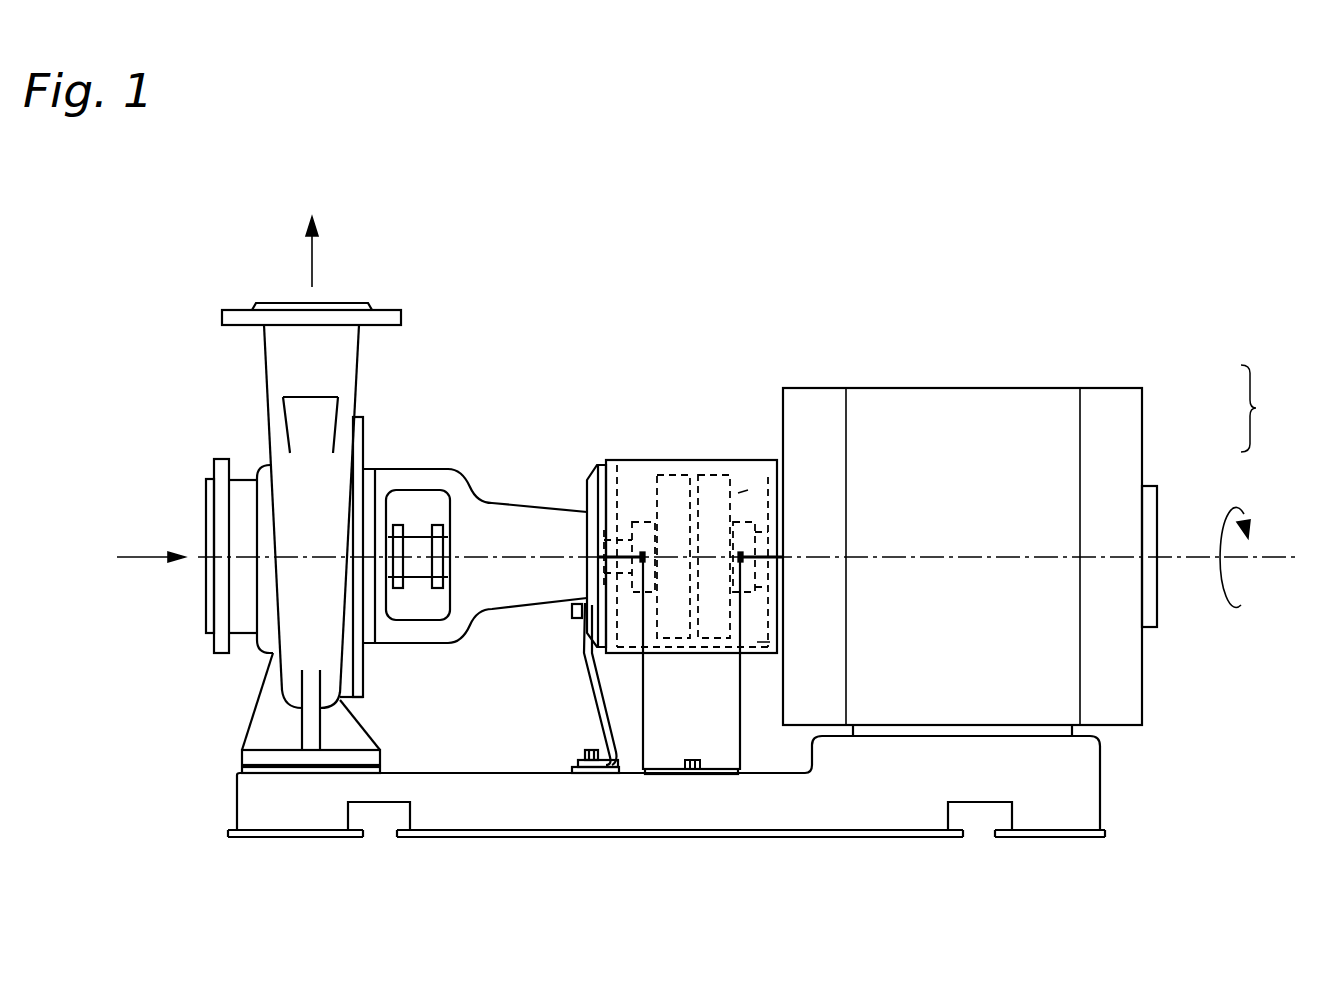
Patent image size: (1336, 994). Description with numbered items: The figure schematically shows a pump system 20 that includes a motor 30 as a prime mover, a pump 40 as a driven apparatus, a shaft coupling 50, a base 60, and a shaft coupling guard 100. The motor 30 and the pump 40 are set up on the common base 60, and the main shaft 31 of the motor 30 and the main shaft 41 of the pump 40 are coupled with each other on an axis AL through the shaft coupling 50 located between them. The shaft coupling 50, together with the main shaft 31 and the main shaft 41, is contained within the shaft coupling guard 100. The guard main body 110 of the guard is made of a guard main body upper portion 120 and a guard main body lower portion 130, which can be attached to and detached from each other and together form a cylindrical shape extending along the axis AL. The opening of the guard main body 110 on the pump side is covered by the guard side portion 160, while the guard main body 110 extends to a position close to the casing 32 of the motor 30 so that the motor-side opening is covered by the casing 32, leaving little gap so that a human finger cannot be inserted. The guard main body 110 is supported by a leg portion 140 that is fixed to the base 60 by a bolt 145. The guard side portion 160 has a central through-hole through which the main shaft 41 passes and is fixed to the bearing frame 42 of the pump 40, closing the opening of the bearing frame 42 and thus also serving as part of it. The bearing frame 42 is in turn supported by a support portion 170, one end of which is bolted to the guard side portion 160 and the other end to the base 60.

The pump system 20 is at (717, 549).
The motor 30 is at (1051, 364).
The main shaft 31 is at (757, 587).
The casing 32 is at (812, 388).
The pump 40 is at (463, 450).
The main shaft 41 is at (625, 543).
The bearing frame 42 is at (524, 610).
The shaft coupling 50 is at (668, 462).
The base 60 is at (1082, 788).
The shaft coupling guard 100 is at (724, 445).
The guard main body 110 is at (1268, 408).
The guard main body upper portion 120 is at (738, 493).
The guard main body lower portion 130 is at (757, 642).
The leg portion 140 is at (755, 744).
The bolt 145 is at (692, 759).
The guard side portion 160 is at (592, 497).
The support portion 170 is at (592, 704).
The axis AL is at (1281, 553).